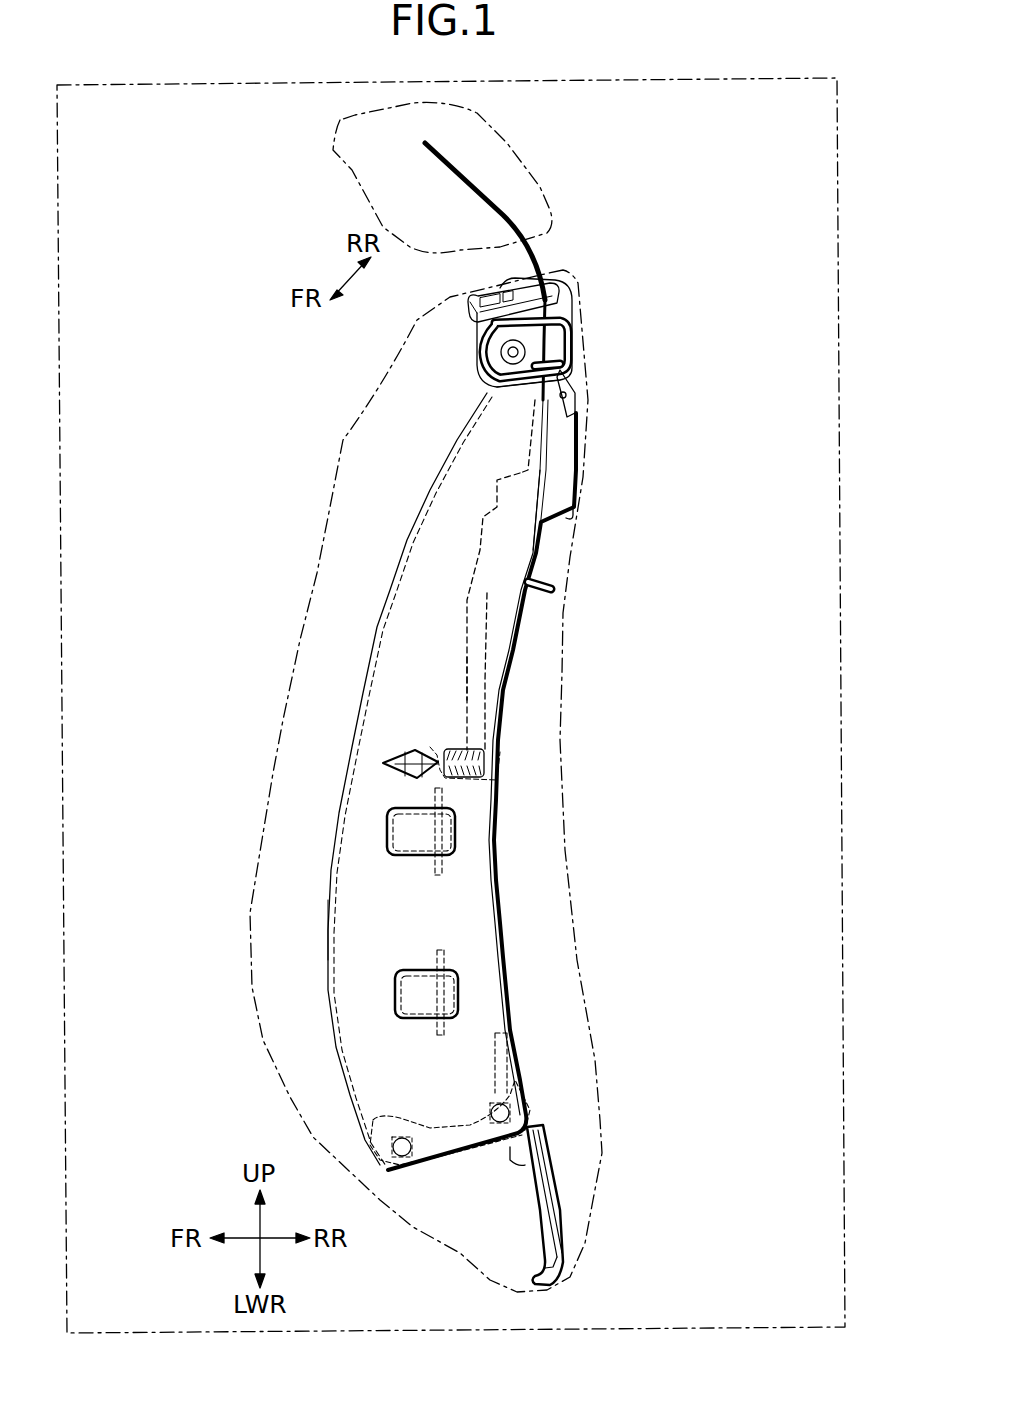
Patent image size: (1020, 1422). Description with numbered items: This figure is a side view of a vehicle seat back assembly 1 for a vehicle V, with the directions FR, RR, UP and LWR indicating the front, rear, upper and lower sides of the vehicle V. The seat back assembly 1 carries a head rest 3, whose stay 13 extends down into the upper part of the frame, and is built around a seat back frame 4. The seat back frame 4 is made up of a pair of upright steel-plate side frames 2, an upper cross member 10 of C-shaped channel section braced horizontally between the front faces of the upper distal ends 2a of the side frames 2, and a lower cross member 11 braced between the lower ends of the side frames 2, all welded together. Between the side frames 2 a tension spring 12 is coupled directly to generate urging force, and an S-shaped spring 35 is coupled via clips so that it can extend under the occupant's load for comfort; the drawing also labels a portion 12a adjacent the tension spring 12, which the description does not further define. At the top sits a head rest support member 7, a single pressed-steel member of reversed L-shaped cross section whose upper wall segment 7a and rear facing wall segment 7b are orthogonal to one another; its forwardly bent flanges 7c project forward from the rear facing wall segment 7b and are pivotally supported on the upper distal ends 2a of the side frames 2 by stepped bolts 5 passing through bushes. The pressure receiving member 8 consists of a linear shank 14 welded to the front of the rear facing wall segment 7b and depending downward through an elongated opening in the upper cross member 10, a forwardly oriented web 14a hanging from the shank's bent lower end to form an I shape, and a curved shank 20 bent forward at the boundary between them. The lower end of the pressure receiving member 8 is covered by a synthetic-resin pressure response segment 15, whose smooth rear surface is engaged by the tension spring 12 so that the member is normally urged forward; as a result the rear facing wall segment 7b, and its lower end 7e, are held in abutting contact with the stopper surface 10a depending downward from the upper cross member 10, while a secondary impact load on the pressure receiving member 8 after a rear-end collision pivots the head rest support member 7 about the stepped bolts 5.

The vehicle V is at (700, 80).
The vehicle seat back assembly 1 is at (314, 591).
The side frame 2 is at (383, 700).
The upper distal end 2a is at (474, 321).
The head rest 3 is at (352, 175).
The seat back frame 4 is at (327, 917).
The stepped bolt 5 is at (517, 389).
The head rest support member 7 is at (479, 315).
The upper wall segment 7a is at (505, 288).
The rear facing wall segment 7b is at (570, 330).
The forwardly bent flange 7c is at (500, 347).
The lower end 7e is at (577, 393).
The pressure receiving member 8 is at (479, 589).
The upper cross member 10 is at (483, 388).
The stopper surface 10a is at (576, 440).
The lower cross member 11 is at (558, 1208).
The tension spring 12 is at (437, 747).
The clip threaded portion 12a is at (485, 748).
The stay 13 is at (490, 197).
The linear shank 14 is at (490, 512).
The forwardly oriented web 14a is at (467, 657).
The pressure response segment 15 is at (488, 680).
The curved shank 20 is at (547, 430).
The S-shaped spring 35 is at (433, 862).